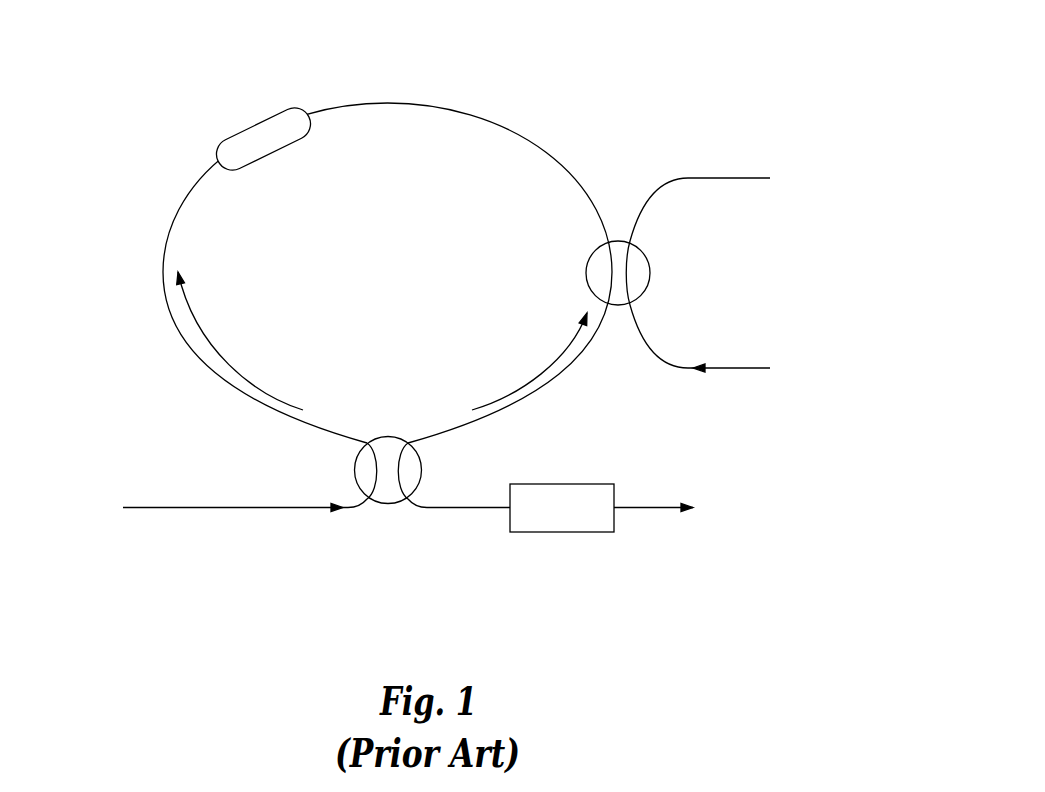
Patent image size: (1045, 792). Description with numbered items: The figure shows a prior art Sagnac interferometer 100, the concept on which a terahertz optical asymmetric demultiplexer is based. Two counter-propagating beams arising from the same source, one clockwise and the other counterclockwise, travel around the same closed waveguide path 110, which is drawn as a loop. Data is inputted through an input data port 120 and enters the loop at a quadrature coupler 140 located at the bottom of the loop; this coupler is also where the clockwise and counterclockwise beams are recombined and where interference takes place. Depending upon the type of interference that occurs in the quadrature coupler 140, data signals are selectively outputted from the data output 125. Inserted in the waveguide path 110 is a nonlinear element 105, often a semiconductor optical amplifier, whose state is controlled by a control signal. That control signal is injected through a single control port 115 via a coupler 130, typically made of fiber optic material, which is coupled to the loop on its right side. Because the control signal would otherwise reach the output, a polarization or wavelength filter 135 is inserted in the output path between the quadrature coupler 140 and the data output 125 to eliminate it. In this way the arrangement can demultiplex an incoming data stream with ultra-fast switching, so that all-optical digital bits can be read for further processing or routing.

The Sagnac interferometer 100 is at (470, 82).
The nonlinear element (NLE) 105 is at (213, 155).
The closed waveguide path 110 is at (163, 272).
The control port 115 is at (682, 368).
The input data port 120 is at (232, 508).
The data output 125 is at (687, 508).
The coupler 130 is at (617, 240).
The filter 135 is at (560, 532).
The quadrature coupler 140 is at (385, 508).